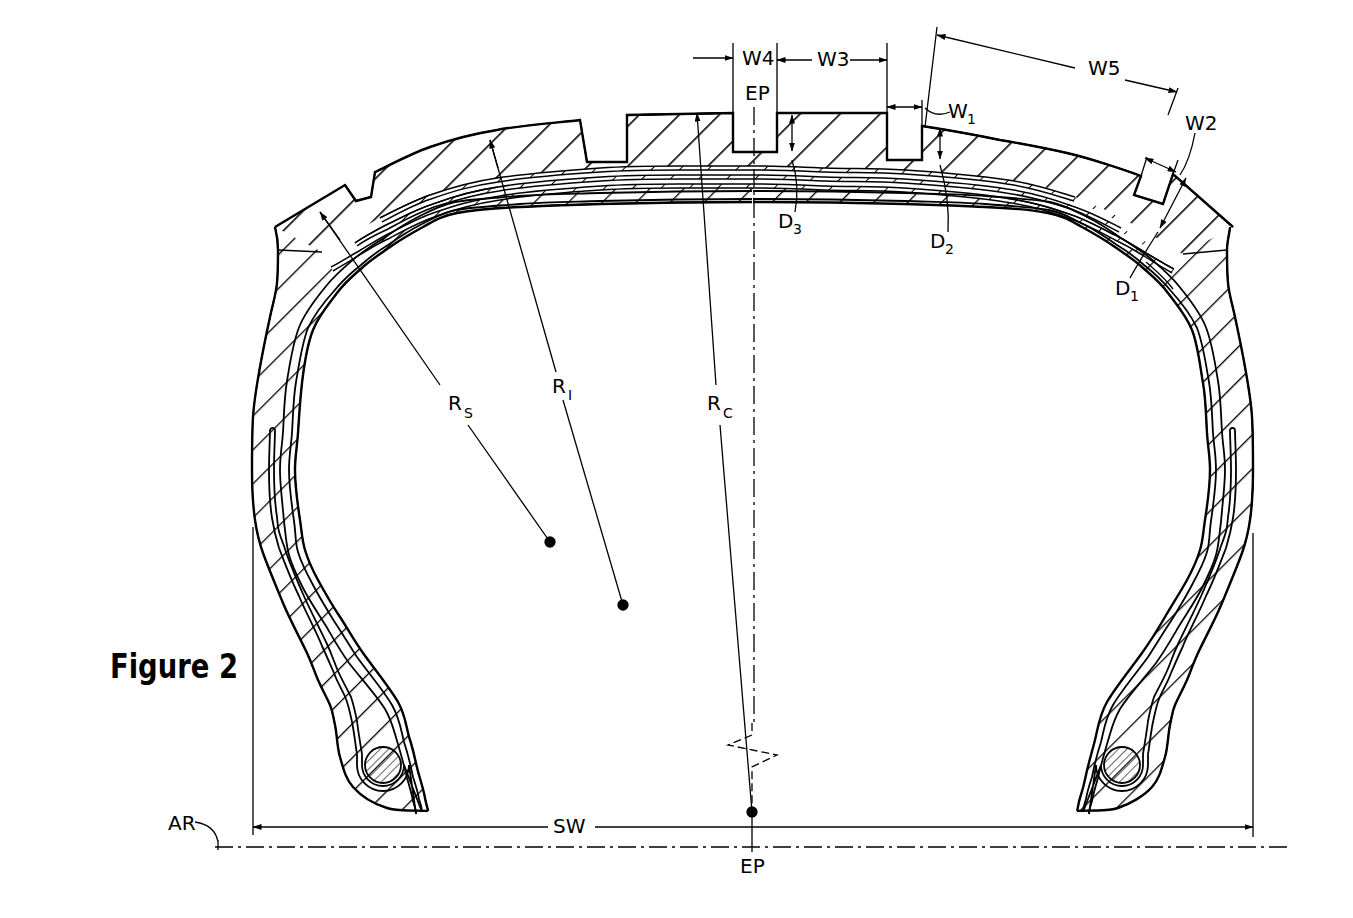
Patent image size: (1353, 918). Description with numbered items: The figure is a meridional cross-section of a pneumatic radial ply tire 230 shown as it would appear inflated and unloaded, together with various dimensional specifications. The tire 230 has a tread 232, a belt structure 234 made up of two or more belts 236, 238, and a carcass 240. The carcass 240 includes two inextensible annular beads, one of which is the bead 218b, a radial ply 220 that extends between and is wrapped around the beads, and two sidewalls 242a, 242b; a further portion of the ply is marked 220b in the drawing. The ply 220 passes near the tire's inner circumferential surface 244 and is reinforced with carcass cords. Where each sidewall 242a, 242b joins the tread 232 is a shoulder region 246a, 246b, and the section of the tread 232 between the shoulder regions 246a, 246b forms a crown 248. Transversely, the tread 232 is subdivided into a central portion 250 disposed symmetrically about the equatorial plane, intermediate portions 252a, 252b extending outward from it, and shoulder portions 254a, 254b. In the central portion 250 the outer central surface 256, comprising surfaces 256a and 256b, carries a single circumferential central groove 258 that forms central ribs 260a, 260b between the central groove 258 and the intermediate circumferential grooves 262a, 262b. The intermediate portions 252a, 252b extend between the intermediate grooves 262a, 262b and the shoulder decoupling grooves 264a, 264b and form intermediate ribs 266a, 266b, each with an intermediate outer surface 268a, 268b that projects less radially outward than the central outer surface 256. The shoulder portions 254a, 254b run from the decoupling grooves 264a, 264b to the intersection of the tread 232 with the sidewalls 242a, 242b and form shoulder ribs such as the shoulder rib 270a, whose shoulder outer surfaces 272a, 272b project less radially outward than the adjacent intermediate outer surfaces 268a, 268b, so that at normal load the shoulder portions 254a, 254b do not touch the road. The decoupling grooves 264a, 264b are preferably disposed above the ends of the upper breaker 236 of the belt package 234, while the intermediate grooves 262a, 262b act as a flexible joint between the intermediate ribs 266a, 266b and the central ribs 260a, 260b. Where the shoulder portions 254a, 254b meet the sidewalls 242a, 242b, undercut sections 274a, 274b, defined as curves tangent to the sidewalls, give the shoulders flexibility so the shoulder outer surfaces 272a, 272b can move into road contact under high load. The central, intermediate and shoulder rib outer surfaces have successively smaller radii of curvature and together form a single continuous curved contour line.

The inextensible annular bead 218b is at (1123, 773).
The radial ply 220 is at (1140, 643).
The carcass ply portion 220b is at (1170, 250).
The tire 230 is at (953, 82).
The tread 232 is at (1100, 177).
The belt structure 234 is at (1146, 195).
The upper breaker 236 is at (328, 205).
The belt 238 is at (405, 240).
The carcass 240 is at (1243, 400).
The sidewall 242a is at (253, 463).
The sidewall 242b is at (1257, 467).
The inner circumferential surface 244 is at (1197, 328).
The shoulder region 246a is at (285, 240).
The shoulder region 246b is at (1220, 233).
The crown 248 is at (1097, 200).
The central portion 250 is at (813, 92).
The intermediate portion 252a is at (505, 222).
The intermediate portion 252b is at (1022, 185).
The shoulder portion 254a is at (312, 215).
The shoulder portion 254b is at (1207, 227).
The outer central surface 256 is at (842, 112).
The outer surface 256a is at (665, 118).
The outer surface 256b is at (892, 105).
The central groove 258 is at (747, 112).
The central rib 260a is at (663, 145).
The central rib 260b is at (823, 133).
The intermediate groove 262a is at (588, 140).
The intermediate groove 262b is at (898, 140).
The shoulder decoupling groove 264a is at (360, 182).
The shoulder decoupling groove 264b is at (1107, 223).
The intermediate rib 266a is at (432, 170).
The intermediate rib 266b is at (997, 143).
The intermediate outer surface 268a is at (382, 157).
The intermediate outer surface 268b is at (1023, 160).
The shoulder rib 270a is at (293, 235).
The shoulder outer surface 272a is at (312, 196).
The shoulder outer surface 272b is at (1190, 192).
The undercut section 274a is at (280, 276).
The undercut section 274b is at (1232, 280).